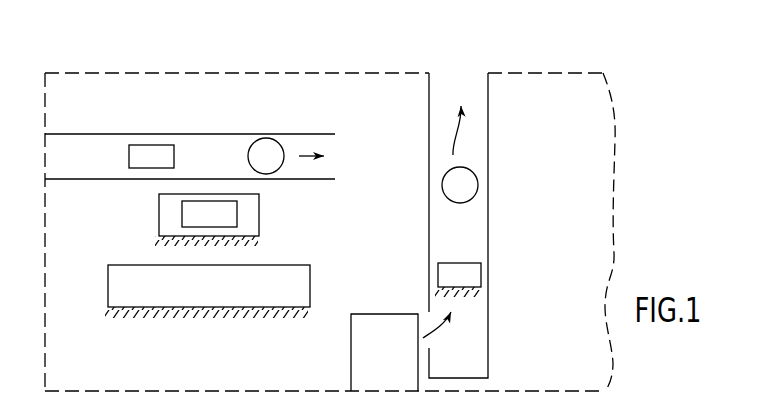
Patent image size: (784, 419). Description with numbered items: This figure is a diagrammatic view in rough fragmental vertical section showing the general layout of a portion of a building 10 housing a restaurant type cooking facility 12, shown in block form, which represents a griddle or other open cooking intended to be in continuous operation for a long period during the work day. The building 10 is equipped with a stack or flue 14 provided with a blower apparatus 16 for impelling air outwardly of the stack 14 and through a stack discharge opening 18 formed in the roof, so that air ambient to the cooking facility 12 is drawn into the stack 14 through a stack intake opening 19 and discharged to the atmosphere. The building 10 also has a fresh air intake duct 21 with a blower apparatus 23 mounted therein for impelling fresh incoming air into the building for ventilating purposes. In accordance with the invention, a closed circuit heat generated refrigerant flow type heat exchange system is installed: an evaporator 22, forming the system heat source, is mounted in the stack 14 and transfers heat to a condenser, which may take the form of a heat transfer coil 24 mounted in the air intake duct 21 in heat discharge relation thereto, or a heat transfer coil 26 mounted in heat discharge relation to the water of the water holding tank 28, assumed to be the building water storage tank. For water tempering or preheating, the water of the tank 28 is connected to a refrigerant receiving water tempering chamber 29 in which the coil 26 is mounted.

The building 10 is at (641, 113).
The cooking facility 12 is at (280, 359).
The stack 14 is at (500, 222).
The blower apparatus 16 is at (488, 183).
The stack discharge opening 18 is at (477, 82).
The stack intake opening 19 is at (428, 351).
The fresh air intake duct 21 is at (95, 130).
The evaporator 22 is at (489, 275).
The blower apparatus 23 is at (268, 130).
The heat transfer coil 24 is at (159, 132).
The heat transfer coil 26 is at (172, 216).
The water holding tank 28 is at (318, 291).
The water tempering chamber 29 is at (259, 215).